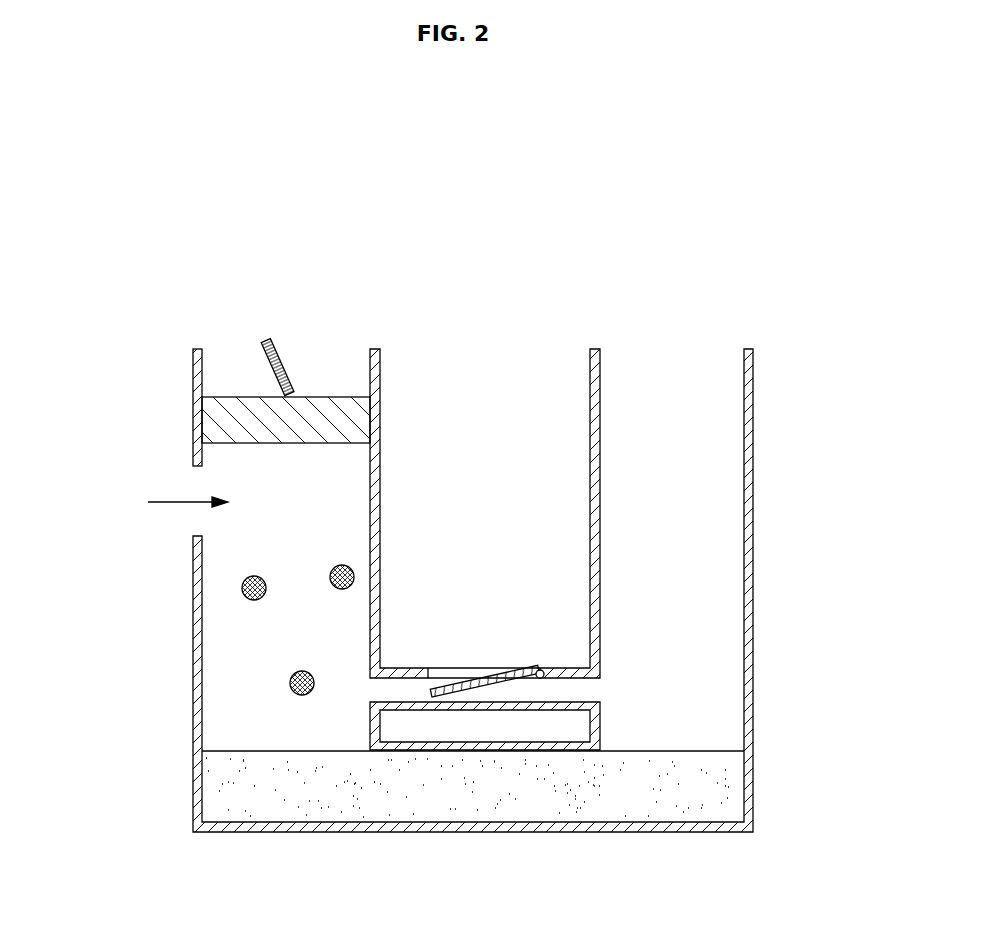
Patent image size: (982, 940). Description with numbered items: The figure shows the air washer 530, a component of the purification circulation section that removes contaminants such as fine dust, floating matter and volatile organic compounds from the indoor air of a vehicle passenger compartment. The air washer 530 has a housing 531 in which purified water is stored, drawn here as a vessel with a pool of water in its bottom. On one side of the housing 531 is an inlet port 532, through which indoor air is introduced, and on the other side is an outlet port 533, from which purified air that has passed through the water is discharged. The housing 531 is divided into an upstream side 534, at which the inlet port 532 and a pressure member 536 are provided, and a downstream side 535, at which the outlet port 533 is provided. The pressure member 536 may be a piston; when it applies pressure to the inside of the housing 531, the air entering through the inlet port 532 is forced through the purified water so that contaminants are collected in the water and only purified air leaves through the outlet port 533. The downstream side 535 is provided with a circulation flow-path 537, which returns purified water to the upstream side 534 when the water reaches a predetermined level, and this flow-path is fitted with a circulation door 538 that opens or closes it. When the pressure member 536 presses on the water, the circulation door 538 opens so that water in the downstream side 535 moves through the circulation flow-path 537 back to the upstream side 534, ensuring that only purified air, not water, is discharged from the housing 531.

The air washer 530 is at (516, 292).
The housing 531 is at (447, 822).
The inlet port 532 is at (214, 486).
The outlet port 533 is at (677, 371).
The upstream side 534 is at (259, 639).
The downstream side 535 is at (683, 593).
The pressure member 536 is at (217, 422).
The circulation flow-path 537 is at (561, 689).
The circulation door 538 is at (485, 678).